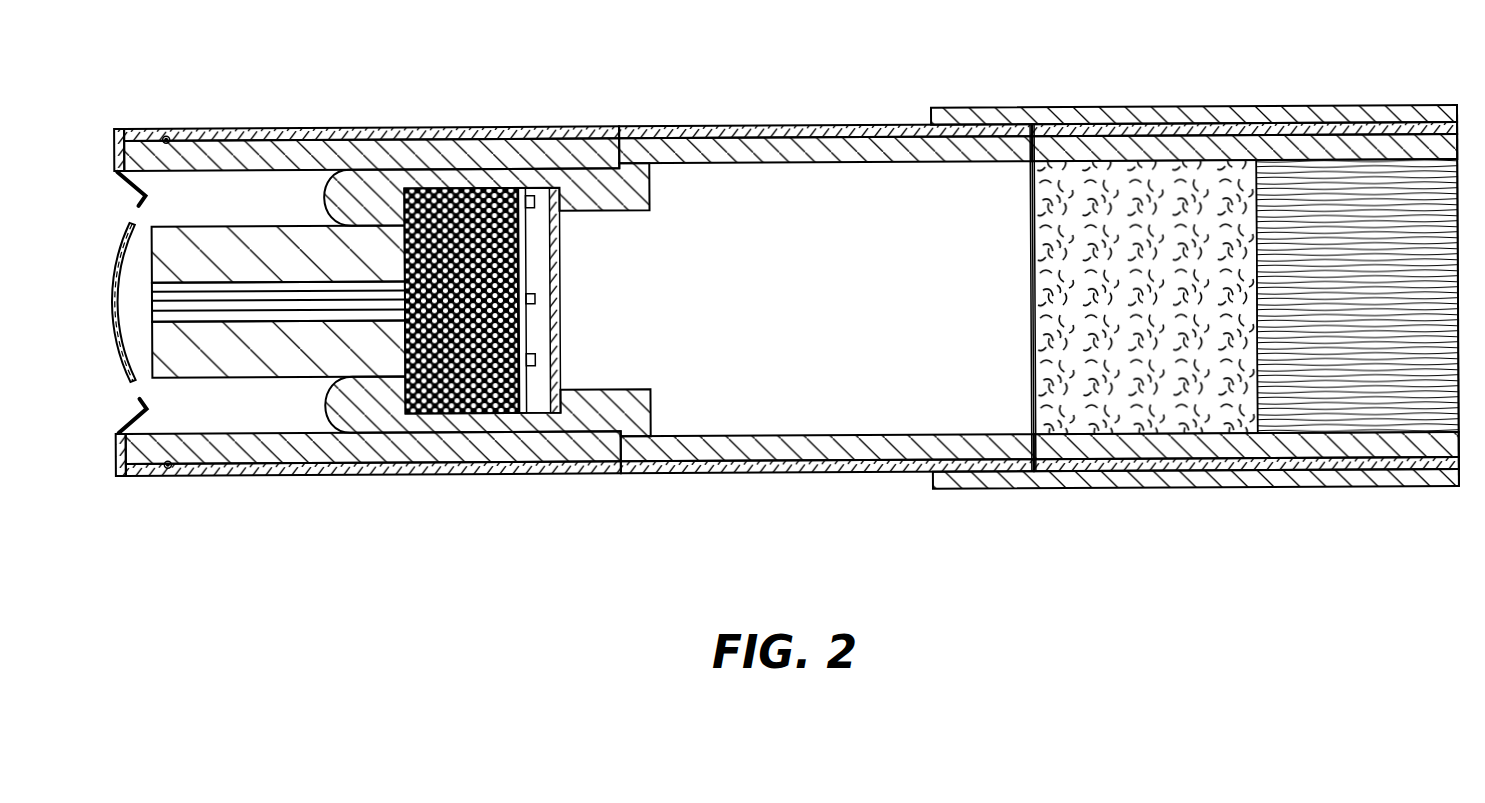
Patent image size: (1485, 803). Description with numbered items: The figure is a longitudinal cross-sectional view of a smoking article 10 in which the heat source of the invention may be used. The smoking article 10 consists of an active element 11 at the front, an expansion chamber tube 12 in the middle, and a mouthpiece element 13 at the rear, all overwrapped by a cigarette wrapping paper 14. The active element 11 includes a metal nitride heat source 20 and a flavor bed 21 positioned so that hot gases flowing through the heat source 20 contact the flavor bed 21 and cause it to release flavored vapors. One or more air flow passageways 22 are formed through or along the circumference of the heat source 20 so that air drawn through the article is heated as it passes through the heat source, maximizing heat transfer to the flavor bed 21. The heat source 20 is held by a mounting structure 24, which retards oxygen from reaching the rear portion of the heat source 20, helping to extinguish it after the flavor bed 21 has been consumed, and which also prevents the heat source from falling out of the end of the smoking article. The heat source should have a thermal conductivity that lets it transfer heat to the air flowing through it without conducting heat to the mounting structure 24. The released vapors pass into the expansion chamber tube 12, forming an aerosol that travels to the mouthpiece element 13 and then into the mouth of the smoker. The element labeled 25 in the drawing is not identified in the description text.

The smoking article 10 is at (862, 97).
The active element 11 is at (118, 597).
The expansion chamber tube 12 is at (1037, 560).
The mouthpiece element 13 is at (1452, 543).
The cigarette wrapping paper 14 is at (179, 132).
The heat source 20 is at (277, 362).
The flavor bed 21 is at (462, 192).
The air flow passageways 22 is at (197, 308).
The mounting structure 24 is at (325, 187).
The housing wall 25 is at (240, 183).